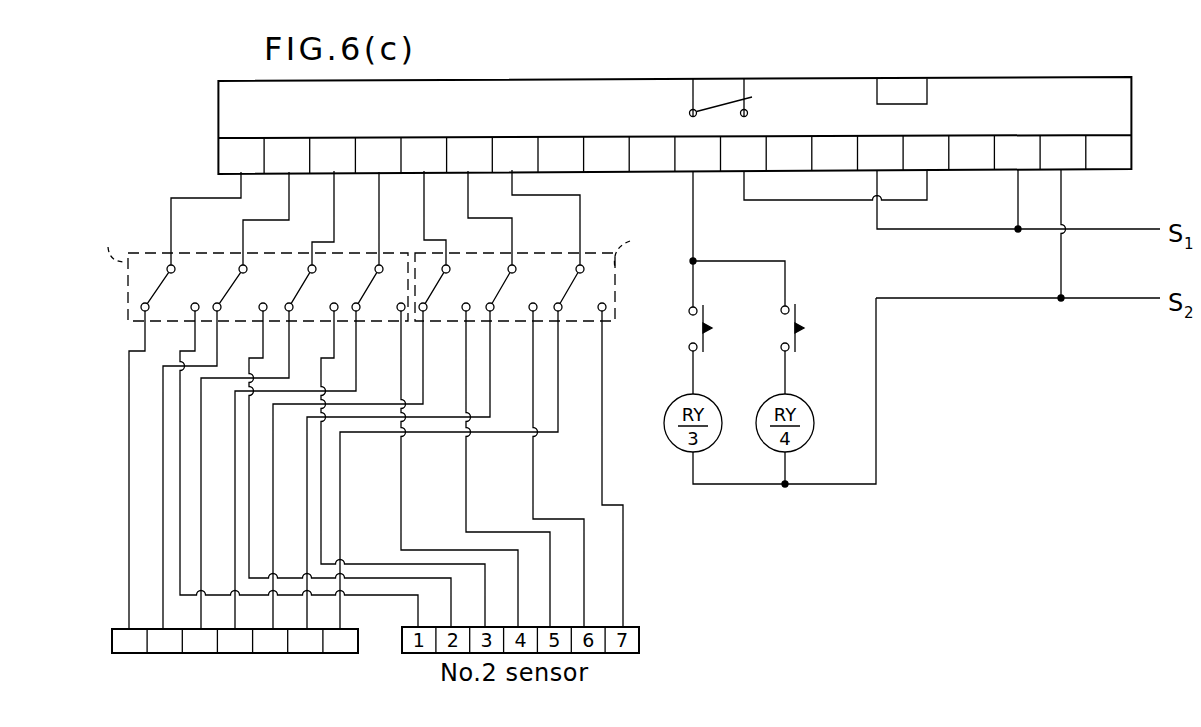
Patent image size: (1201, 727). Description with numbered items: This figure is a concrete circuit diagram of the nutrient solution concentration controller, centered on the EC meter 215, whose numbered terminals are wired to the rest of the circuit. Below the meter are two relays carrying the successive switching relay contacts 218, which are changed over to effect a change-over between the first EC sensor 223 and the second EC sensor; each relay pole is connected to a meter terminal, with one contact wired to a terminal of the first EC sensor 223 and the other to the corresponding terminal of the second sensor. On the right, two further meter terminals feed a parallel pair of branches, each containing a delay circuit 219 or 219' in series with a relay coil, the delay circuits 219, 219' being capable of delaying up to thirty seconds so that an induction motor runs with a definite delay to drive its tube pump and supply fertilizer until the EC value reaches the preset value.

The EC meter 215 is at (216, 137).
The contacts of the successive switching relay circuit 218 is at (122, 326).
The delay circuit 219 is at (722, 316).
The delay circuit 219' is at (818, 315).
The first EC sensor 223 is at (112, 641).